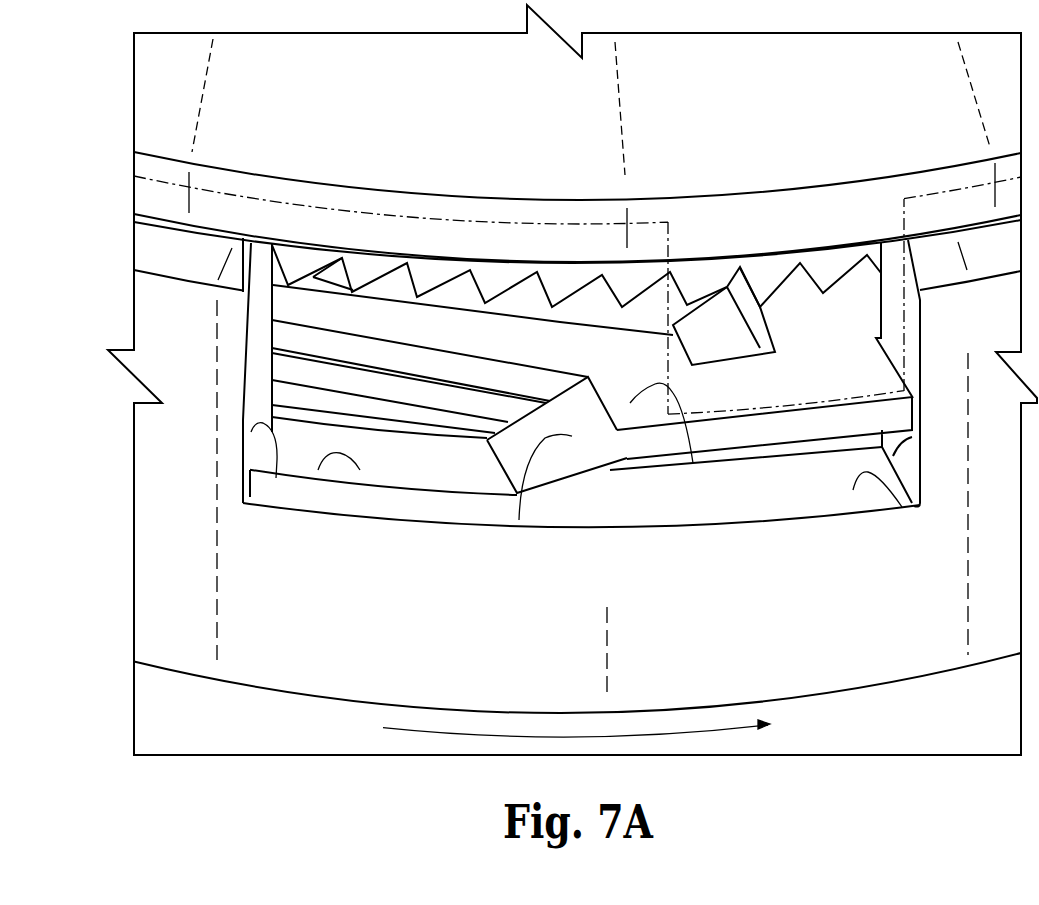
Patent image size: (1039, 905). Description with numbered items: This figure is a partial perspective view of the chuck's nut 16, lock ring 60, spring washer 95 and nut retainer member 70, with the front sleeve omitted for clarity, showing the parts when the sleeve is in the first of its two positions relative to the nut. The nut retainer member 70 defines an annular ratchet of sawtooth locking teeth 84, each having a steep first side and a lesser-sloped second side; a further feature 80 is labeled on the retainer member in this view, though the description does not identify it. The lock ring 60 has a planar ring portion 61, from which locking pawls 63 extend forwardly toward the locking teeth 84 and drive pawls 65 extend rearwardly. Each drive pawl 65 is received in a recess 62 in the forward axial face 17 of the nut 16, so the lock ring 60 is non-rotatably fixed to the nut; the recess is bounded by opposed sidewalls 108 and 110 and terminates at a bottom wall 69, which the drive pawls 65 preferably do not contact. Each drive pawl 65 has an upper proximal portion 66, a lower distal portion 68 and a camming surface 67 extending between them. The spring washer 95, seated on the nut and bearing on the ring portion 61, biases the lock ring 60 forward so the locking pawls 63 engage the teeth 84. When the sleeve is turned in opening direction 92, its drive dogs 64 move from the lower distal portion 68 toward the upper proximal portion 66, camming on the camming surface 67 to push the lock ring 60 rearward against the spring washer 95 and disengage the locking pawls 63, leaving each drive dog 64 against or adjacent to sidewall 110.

The nut retainer member 70 is at (543, 102).
The forward axial face 17 is at (213, 230).
The planar ring portion 61 is at (323, 303).
The locking teeth 84 is at (413, 272).
The locking pawls 63 is at (723, 315).
The ratchet 80 is at (818, 255).
The drive dogs 64 is at (908, 330).
The lock ring 60 is at (837, 347).
The spring washer 95 is at (298, 372).
The recesses 62 is at (656, 540).
The camming surface 67 is at (519, 520).
The drive pawls 65 is at (577, 500).
The sidewall 108 is at (276, 478).
The lower distal portion 68 is at (318, 470).
The upper proximal portion 66 is at (693, 463).
The bottom wall 69 is at (902, 507).
The sidewall 110 is at (920, 490).
The nut 16 is at (522, 658).
The opening direction 92 is at (707, 729).